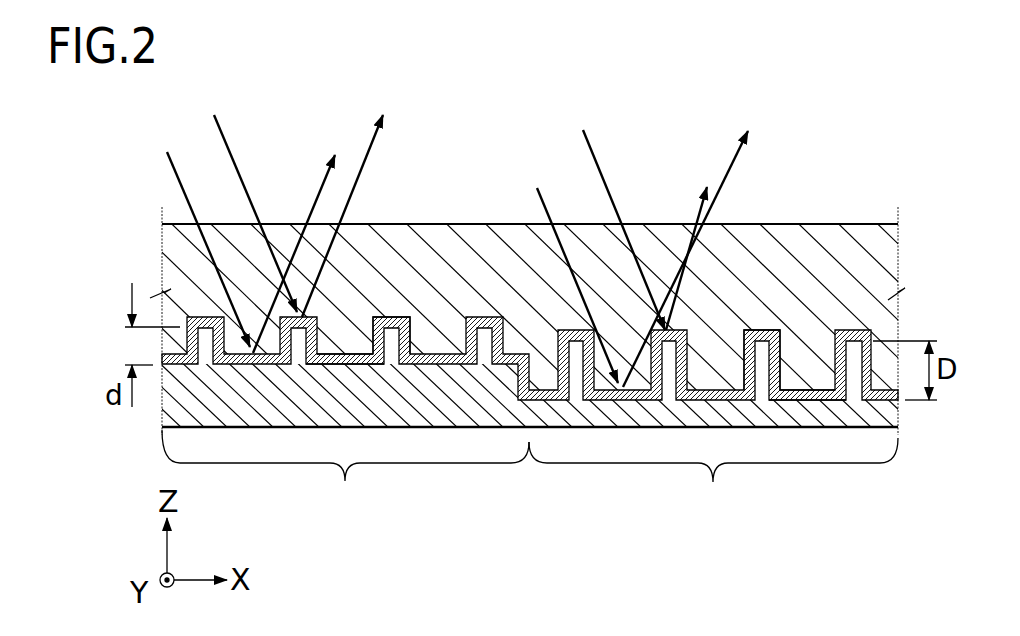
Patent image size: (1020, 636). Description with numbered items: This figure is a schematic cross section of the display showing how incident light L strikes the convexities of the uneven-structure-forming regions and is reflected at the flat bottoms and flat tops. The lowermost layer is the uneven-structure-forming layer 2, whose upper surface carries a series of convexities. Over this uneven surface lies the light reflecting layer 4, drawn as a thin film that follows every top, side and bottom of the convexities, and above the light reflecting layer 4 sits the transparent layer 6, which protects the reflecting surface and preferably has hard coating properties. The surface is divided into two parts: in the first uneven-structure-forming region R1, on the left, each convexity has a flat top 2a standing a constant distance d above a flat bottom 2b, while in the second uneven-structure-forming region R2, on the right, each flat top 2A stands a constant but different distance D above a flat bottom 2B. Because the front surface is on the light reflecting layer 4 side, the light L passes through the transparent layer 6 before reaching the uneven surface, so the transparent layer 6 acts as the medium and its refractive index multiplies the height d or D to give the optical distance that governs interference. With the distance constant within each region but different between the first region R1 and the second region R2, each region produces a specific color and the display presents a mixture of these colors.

The uneven-structure-forming layer 2 is at (890, 413).
The flat top 2a is at (395, 318).
The flat bottom 2b is at (345, 355).
The flat top 2A is at (762, 338).
The flat bottom 2B is at (809, 395).
The light reflecting layer 4 is at (853, 333).
The transparent layer 6 is at (862, 243).
The light L is at (178, 182).
The first uneven-structure-forming region R1 is at (345, 474).
The second uneven-structure-forming region R2 is at (713, 478).